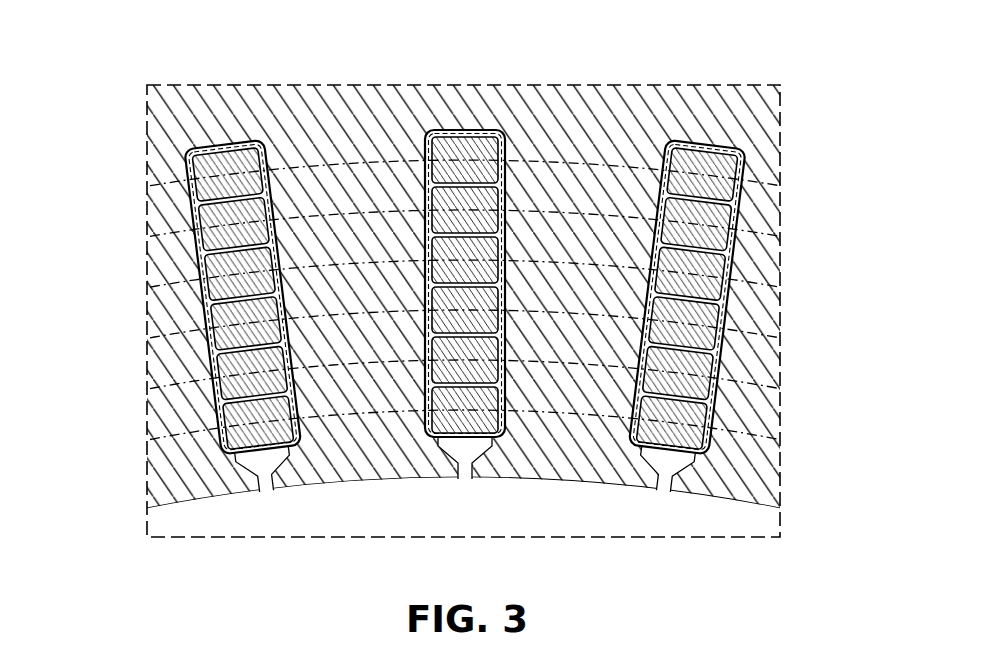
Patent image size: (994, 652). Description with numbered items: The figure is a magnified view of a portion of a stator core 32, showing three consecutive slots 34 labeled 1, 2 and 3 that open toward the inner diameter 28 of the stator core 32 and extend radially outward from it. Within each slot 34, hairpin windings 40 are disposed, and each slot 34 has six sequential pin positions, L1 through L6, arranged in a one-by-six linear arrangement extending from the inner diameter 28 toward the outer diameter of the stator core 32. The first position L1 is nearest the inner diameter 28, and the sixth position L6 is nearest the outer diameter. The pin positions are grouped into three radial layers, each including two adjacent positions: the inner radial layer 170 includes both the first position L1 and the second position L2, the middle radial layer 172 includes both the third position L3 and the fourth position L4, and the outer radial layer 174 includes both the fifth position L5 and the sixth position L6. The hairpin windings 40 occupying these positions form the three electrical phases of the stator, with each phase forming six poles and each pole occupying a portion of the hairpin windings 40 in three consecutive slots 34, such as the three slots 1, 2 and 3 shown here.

The stator core 32 is at (512, 85).
The inner diameter 28 is at (517, 477).
The hairpin windings 40 is at (704, 157).
The slot 34 is at (280, 458).
The inner radial layer 170 is at (426, 412).
The middle radial layer 172 is at (408, 308).
The outer radial layer 174 is at (426, 206).
The slot 1 is at (687, 332).
The slot 2 is at (465, 321).
The slot 3 is at (242, 330).
The first position L1 is at (465, 420).
The second position L2 is at (465, 369).
The third position L3 is at (465, 318).
The fourth position L4 is at (465, 269).
The fifth position L5 is at (465, 218).
The sixth position L6 is at (465, 168).